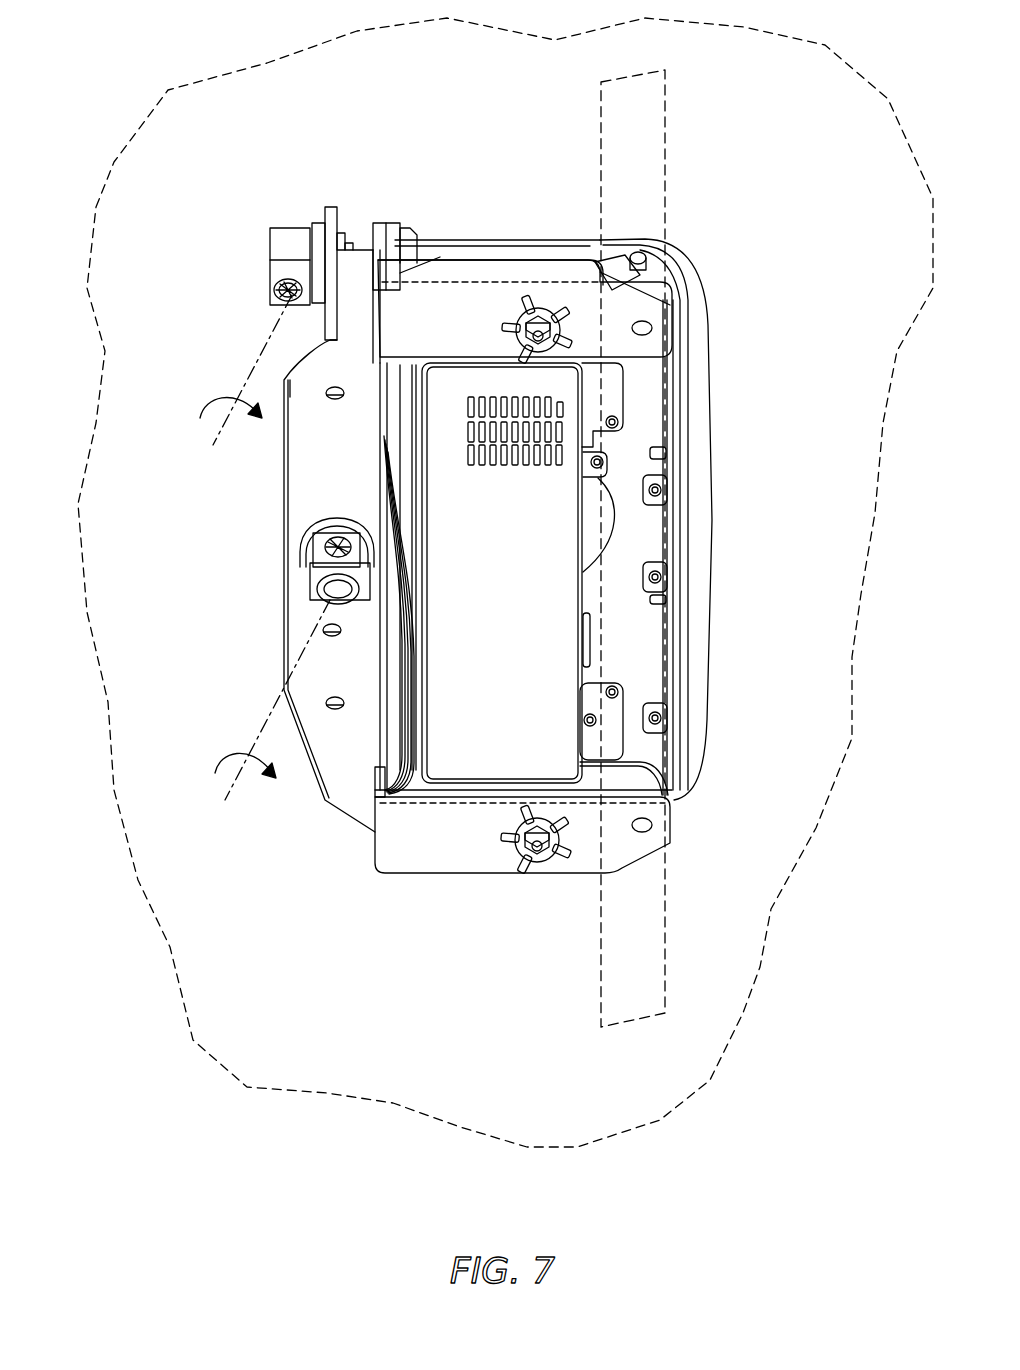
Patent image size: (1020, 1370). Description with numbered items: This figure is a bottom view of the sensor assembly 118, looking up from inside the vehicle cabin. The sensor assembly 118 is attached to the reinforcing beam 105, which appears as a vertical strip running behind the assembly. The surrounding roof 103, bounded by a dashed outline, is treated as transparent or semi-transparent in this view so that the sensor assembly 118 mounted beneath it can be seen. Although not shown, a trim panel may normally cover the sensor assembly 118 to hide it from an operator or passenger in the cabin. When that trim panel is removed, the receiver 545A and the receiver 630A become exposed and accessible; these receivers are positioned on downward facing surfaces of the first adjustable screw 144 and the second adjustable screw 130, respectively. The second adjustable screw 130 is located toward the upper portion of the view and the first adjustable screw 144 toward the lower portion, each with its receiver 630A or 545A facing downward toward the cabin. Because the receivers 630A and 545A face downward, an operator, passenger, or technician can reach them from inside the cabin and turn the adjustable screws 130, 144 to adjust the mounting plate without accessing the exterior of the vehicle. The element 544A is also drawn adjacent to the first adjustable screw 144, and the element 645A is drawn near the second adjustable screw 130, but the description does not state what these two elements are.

The roof 103 is at (339, 971).
The reinforcing beam 105 is at (648, 137).
The sensor assembly 118 is at (762, 362).
The second adjustable screw 130 is at (290, 228).
The receiver 630A is at (287, 301).
The rotation direction 645A is at (214, 395).
The first adjustable screw 144 is at (298, 548).
The fastener washer 544A is at (318, 585).
The receiver 545A is at (222, 750).